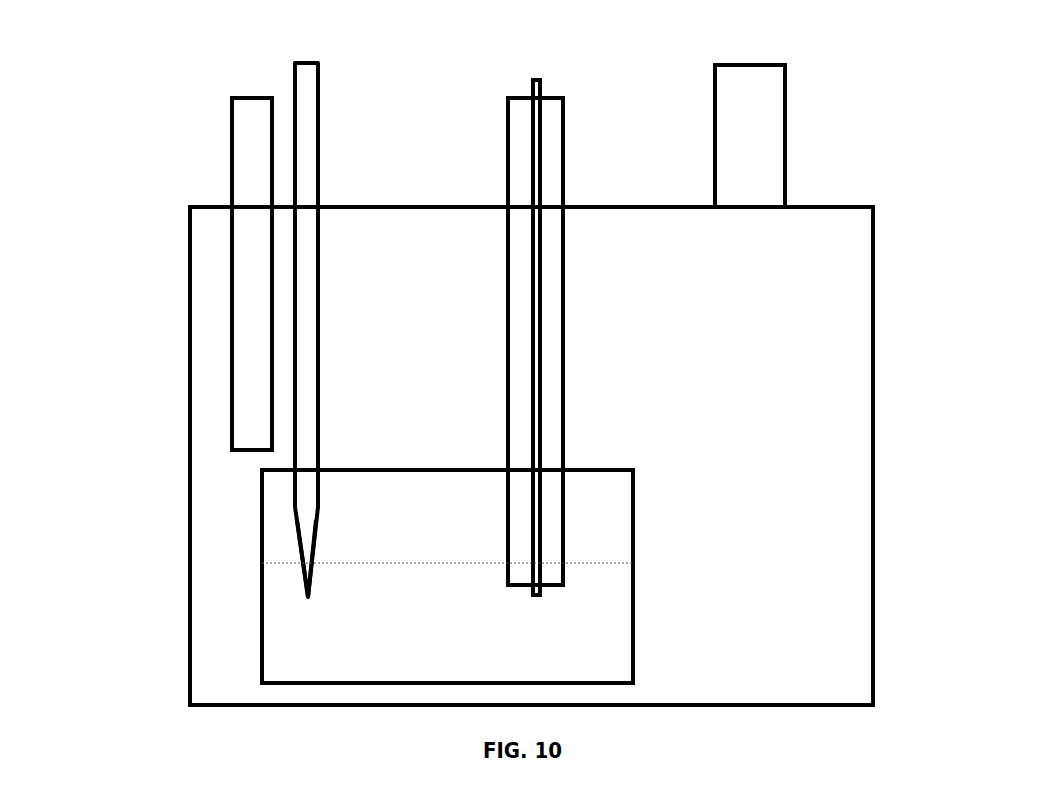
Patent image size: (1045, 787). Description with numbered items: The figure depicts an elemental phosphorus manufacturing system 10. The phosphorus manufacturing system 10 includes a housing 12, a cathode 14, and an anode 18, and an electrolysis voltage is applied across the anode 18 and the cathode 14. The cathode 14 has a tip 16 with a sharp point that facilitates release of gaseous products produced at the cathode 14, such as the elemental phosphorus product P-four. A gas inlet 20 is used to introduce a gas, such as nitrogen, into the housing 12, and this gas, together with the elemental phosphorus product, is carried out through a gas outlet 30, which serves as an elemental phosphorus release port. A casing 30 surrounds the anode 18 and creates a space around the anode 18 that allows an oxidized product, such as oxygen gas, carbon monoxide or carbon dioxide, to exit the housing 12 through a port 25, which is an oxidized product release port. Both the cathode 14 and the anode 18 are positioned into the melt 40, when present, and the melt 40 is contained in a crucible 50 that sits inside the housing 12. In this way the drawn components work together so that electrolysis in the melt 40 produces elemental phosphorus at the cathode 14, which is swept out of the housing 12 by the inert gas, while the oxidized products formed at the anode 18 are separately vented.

The phosphorus manufacturing system 10 is at (148, 163).
The housing 12 is at (207, 383).
The cathode 14 is at (308, 123).
The tip 16 is at (308, 595).
The anode 18 is at (540, 88).
The gas inlet 20 is at (232, 170).
The port 25 is at (513, 95).
The gas outlet / casing 30 is at (780, 118).
The melt 40 is at (598, 600).
The crucible 50 is at (634, 505).